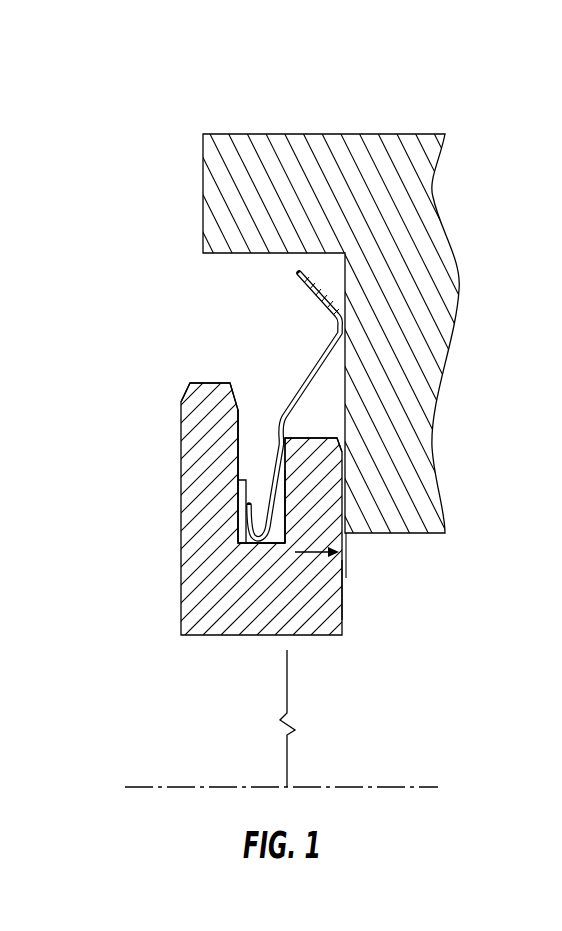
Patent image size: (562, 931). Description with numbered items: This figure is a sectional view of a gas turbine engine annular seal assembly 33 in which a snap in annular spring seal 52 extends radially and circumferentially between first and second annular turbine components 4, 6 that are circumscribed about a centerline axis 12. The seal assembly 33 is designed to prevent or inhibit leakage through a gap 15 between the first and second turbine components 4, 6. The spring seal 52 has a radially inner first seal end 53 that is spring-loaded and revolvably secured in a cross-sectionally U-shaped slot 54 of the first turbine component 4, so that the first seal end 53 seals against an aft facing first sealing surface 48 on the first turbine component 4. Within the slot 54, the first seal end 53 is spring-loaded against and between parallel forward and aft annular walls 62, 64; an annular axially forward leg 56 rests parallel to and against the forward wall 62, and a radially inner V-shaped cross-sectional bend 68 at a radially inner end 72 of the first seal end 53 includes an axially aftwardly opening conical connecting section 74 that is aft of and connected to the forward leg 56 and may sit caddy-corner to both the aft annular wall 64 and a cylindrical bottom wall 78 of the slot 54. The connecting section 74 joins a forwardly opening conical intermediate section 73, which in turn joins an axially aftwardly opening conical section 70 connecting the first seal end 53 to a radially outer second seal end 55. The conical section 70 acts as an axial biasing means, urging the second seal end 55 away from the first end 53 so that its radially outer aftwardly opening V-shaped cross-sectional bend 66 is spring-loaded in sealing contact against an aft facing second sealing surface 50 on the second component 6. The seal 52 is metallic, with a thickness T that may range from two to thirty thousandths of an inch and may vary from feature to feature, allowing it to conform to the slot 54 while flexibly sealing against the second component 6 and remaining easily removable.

The first turbine component 4 is at (313, 637).
The second turbine component 6 is at (432, 534).
The centerline axis 12 is at (387, 787).
The gap 15 is at (350, 552).
The annular seal assembly 33 is at (281, 536).
The first sealing surface 48 is at (275, 462).
The second sealing surface 50 is at (345, 260).
The snap in annular spring seal 52 is at (312, 370).
The first seal end 53 is at (268, 488).
The slot 54 is at (342, 585).
The second seal end 55 is at (298, 268).
The axially forward leg 56 is at (238, 500).
The forward annular wall 62 is at (243, 419).
The aft annular wall 64 is at (287, 440).
The V-shaped cross-sectional bend 66 is at (347, 327).
The radially inner V-shaped cross-sectional bend 68 is at (280, 528).
The conical section 70 is at (306, 378).
The radially inner end 72 is at (268, 480).
The conical intermediate section 73 is at (285, 457).
The conical connecting section 74 is at (268, 537).
The cylindrical bottom wall 78 is at (258, 522).
The thickness T is at (352, 378).